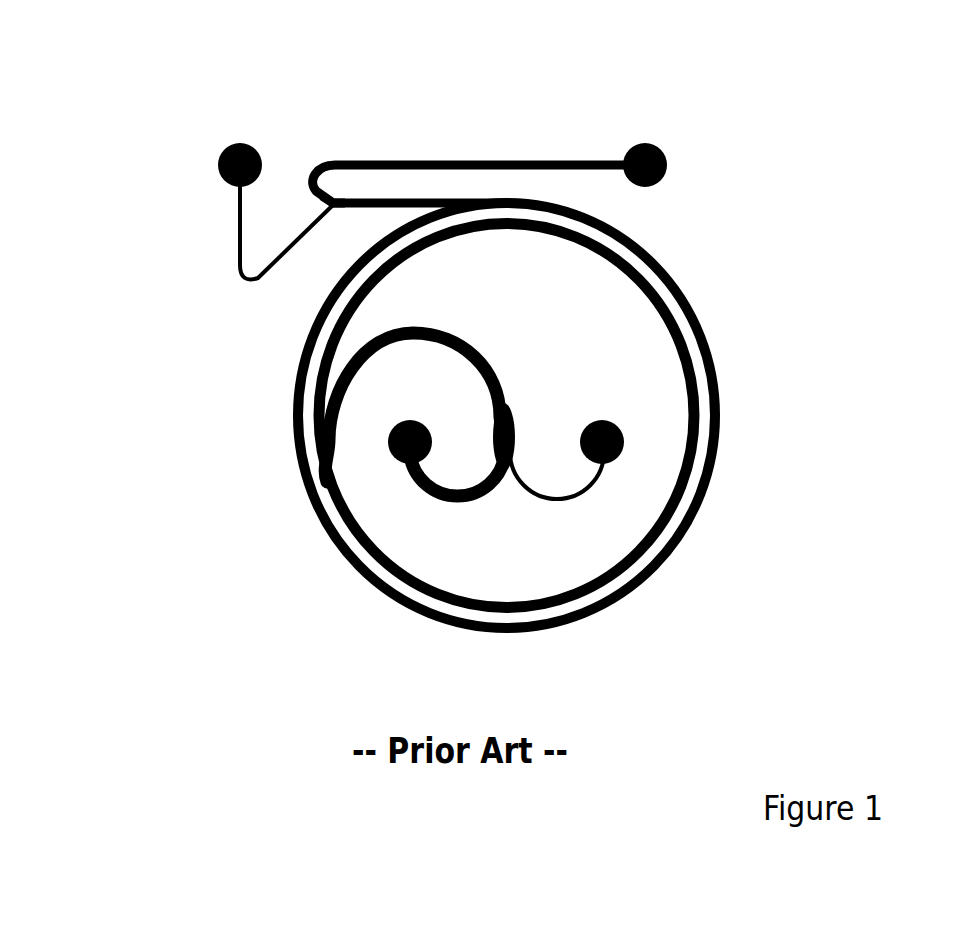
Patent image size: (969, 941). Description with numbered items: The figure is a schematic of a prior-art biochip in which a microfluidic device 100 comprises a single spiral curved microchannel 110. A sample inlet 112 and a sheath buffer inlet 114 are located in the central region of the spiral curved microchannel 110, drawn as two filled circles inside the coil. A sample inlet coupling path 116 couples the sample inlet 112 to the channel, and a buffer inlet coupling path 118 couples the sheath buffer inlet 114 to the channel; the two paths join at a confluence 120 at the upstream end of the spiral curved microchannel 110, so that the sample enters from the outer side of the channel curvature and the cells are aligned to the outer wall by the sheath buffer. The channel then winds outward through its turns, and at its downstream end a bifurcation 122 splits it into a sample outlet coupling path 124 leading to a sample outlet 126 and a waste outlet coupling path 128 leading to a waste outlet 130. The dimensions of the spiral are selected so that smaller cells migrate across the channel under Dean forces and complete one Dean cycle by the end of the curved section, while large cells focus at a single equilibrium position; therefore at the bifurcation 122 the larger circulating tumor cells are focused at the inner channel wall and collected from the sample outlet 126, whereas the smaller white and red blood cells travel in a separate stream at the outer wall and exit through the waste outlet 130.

The microfluidic device 100 is at (185, 90).
The spiral curved microchannel 110 is at (718, 388).
The sample inlet 112 is at (620, 452).
The sheath buffer inlet 114 is at (390, 443).
The sample inlet coupling path 116 is at (567, 500).
The buffer inlet coupling path 118 is at (428, 505).
The confluence 120 is at (508, 400).
The bifurcation 122 is at (333, 207).
The sample outlet coupling path 124 is at (240, 245).
The sample outlet 126 is at (248, 146).
The waste outlet coupling path 128 is at (433, 160).
The waste outlet 130 is at (660, 150).